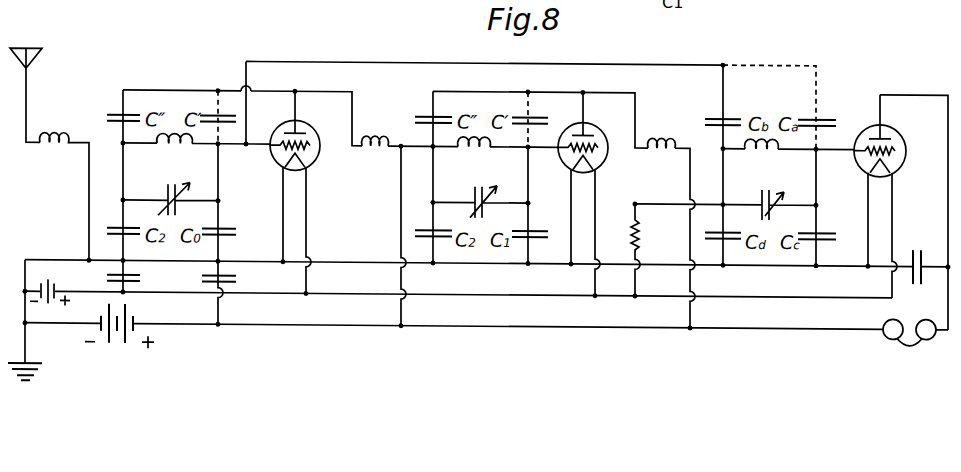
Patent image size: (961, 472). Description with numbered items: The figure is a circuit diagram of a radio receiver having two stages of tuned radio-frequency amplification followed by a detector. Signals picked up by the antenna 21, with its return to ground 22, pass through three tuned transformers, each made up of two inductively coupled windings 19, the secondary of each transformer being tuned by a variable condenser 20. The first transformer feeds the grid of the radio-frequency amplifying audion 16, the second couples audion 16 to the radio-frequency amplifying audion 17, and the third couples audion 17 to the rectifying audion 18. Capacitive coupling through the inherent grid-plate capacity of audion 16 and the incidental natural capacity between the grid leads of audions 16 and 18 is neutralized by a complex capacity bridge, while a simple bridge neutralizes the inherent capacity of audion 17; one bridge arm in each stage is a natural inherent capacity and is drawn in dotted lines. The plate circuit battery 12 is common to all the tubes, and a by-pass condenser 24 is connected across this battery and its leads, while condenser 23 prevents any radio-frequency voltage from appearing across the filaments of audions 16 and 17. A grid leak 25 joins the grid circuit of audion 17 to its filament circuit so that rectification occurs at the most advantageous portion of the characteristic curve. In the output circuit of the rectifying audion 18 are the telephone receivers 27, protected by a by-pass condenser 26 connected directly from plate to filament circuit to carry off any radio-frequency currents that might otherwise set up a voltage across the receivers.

The plate circuit battery 12 is at (118, 342).
The radio-frequency amplifying audion 16 is at (333, 110).
The radio-frequency amplifying audion 17 is at (616, 109).
The rectifying audion 18 is at (925, 111).
The inductively coupled windings 19 is at (55, 152).
The variable condenser 20 is at (167, 193).
The antenna 21 is at (40, 54).
The ground 22 is at (40, 373).
The condenser 23 is at (138, 279).
The by-pass condenser 24 is at (235, 280).
The grid leak 25 is at (651, 250).
The by-pass condenser 26 is at (927, 240).
The telephone receivers 27 is at (924, 311).